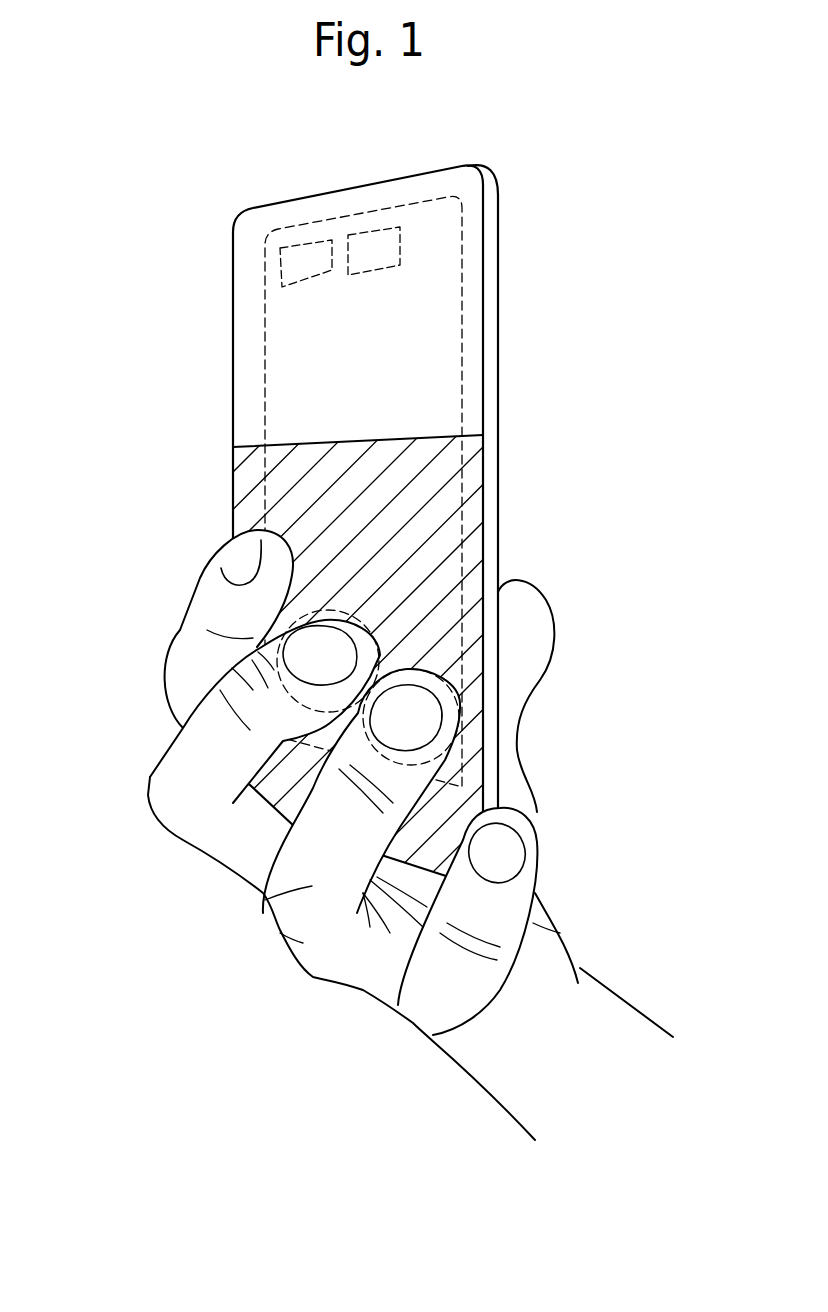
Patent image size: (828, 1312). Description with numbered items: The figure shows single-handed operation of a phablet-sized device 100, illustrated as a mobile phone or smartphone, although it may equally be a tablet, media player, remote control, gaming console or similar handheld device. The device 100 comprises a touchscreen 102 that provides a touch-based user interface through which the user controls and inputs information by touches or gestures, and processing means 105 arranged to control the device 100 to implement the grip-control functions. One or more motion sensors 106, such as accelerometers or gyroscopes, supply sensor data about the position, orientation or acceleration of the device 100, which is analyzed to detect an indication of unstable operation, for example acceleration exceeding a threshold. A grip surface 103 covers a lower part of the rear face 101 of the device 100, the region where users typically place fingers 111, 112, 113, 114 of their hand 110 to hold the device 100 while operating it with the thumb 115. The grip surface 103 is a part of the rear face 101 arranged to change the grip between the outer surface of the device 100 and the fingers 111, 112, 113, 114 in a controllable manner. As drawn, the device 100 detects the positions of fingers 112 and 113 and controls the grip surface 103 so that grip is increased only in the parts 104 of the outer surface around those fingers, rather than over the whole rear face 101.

The device 100 is at (217, 160).
The rear face 101 is at (282, 373).
The touchscreen 102 is at (365, 210).
The grip surface 103 is at (297, 495).
The parts of the outer surface 104 is at (360, 618).
The processing means 105 is at (282, 268).
The motion sensors 106 is at (402, 246).
The hand 110 is at (359, 835).
The finger 111 is at (188, 667).
The finger 112 is at (192, 782).
The finger 113 is at (263, 897).
The finger 114 is at (455, 975).
The thumb 115 is at (533, 630).